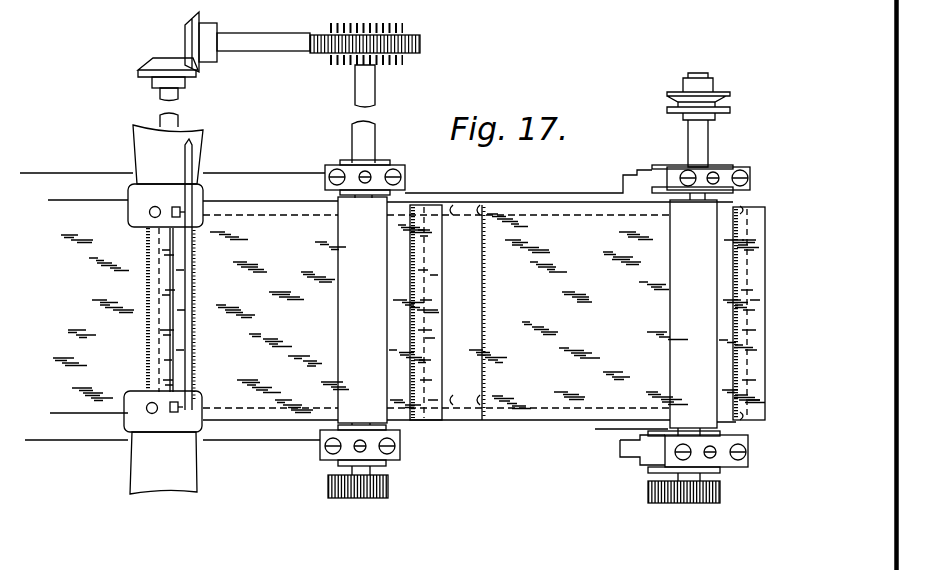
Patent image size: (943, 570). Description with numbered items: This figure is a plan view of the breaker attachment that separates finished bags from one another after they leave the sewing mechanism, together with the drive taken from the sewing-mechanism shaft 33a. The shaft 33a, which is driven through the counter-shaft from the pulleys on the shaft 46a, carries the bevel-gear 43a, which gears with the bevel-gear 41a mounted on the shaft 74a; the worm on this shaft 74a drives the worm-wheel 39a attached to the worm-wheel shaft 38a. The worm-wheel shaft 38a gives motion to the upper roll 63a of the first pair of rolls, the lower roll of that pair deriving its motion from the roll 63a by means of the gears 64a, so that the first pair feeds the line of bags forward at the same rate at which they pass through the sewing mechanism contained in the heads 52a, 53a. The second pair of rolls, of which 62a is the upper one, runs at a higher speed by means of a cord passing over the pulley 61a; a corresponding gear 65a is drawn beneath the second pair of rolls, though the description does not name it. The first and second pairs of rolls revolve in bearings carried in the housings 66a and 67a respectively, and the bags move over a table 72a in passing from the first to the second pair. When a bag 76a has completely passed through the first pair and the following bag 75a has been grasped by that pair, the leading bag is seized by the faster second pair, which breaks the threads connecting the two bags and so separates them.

The sewing-mechanism shaft 33a is at (178, 120).
The worm-wheel shaft 38a is at (355, 139).
The worm-wheel 39a is at (414, 57).
The bevel-gear 41a is at (190, 30).
The bevel-gear 43a is at (152, 62).
The shaft 46a is at (332, 58).
The head of the double-headed sewing mechanism 52a is at (135, 466).
The head of the double-headed sewing mechanism 53a is at (140, 142).
The pulley 61a is at (664, 102).
The upper roll of the second pair of rolls 62a is at (693, 314).
The upper roll of the first pair of rolls 63a is at (362, 310).
The gears 64a is at (389, 488).
The knurled knob 65a is at (697, 504).
The housing 66a is at (401, 452).
The housing 67a is at (725, 466).
The table 72a is at (462, 328).
The shaft 74a is at (262, 50).
The following bag 75a is at (201, 322).
The bag 76a is at (577, 311).